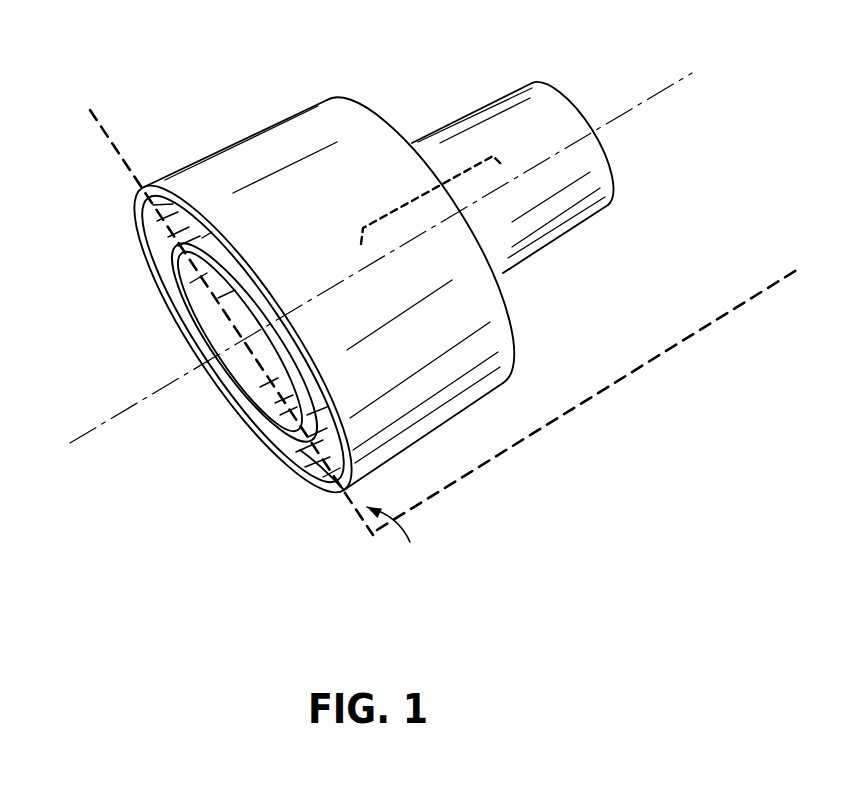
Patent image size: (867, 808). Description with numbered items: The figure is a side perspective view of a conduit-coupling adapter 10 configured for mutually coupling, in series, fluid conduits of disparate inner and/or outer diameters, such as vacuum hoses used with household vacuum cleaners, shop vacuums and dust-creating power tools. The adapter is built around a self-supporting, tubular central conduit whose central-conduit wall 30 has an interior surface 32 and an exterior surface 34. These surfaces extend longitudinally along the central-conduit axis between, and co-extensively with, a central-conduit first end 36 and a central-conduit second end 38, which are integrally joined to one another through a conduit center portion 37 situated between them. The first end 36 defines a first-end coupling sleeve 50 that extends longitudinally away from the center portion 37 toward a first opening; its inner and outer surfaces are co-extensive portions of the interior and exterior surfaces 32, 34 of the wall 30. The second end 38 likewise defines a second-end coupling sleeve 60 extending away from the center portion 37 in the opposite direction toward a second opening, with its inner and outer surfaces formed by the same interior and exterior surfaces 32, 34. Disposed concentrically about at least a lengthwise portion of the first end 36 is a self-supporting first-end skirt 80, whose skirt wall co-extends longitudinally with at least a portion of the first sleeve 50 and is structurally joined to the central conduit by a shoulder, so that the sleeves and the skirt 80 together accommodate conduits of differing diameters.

The conduit-coupling adapter 10 is at (265, 95).
The central-conduit wall 30 is at (538, 202).
The interior surface 32 is at (193, 272).
The exterior surface 34 is at (457, 117).
The central-conduit first end 36 is at (183, 255).
The conduit center portion 37 is at (420, 183).
The central-conduit second end 38 is at (492, 103).
The first-end coupling sleeve 50 is at (295, 457).
The second-end coupling sleeve 60 is at (512, 82).
The first-end skirt 80 is at (418, 432).